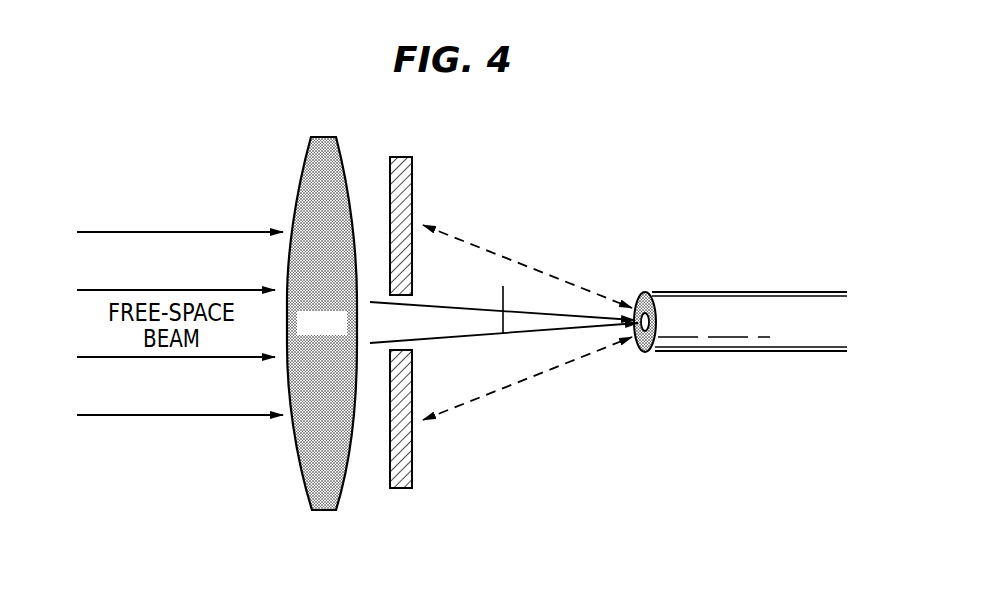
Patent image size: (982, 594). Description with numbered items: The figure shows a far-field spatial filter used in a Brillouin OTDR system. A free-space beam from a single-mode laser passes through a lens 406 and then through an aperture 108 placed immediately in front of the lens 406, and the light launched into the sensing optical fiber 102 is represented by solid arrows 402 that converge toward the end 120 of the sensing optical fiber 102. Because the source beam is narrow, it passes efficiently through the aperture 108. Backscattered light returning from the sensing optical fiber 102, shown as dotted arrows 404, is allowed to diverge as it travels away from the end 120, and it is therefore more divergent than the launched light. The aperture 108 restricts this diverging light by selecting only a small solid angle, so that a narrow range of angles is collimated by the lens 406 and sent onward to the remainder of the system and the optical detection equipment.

The lens 406 is at (325, 136).
The aperture 108 is at (400, 156).
The solid arrows 402 is at (520, 312).
The dotted arrows 404 is at (540, 272).
The sensing optical fiber 102 is at (832, 334).
The end of the sensing optical fiber 120 is at (660, 281).